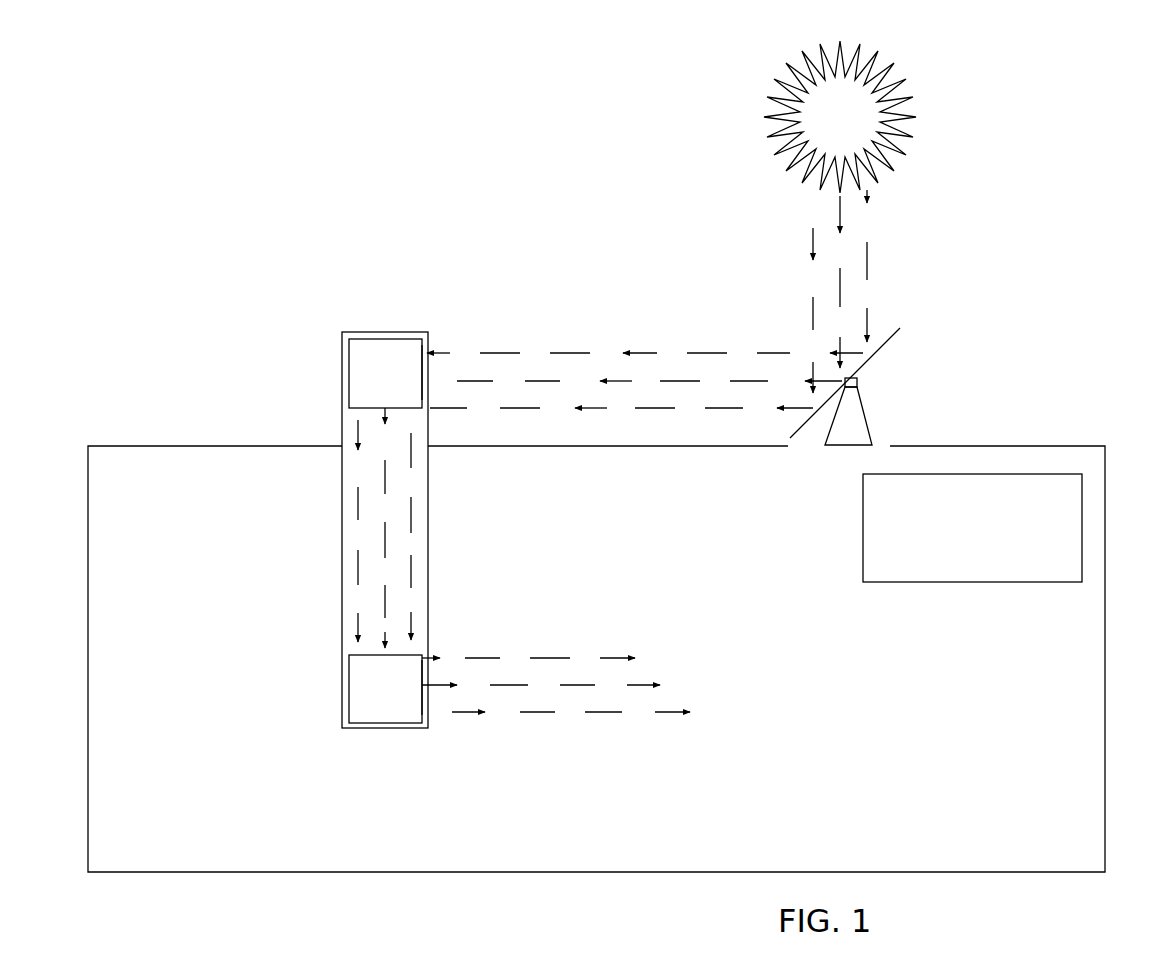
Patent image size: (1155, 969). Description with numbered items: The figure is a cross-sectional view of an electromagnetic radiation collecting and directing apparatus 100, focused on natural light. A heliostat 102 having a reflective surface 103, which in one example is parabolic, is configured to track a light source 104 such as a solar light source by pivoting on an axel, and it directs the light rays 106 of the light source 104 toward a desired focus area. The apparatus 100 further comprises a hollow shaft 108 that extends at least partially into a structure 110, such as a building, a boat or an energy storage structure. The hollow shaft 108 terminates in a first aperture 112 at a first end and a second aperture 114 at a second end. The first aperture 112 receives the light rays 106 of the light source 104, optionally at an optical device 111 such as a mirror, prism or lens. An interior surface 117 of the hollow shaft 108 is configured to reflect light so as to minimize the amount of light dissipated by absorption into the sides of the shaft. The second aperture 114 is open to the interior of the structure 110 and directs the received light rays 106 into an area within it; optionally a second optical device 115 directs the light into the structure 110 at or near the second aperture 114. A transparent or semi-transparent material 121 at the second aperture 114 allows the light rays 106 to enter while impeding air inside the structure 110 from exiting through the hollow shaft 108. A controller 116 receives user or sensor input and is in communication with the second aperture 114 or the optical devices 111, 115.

The electromagnetic radiation collecting and directing apparatus 100 is at (1047, 125).
The heliostat 102 is at (908, 346).
The reflective surface 103 is at (893, 335).
The light source 104 is at (840, 117).
The light rays 106 is at (623, 353).
The hollow shaft 108 is at (380, 516).
The structure 110 is at (596, 659).
The optical device 111 is at (385, 373).
The first aperture 112 is at (428, 374).
The second aperture 114 is at (436, 699).
The second optical device 115 is at (385, 689).
The controller 116 is at (972, 528).
The interior surface 117 is at (427, 565).
The transparent or semi-transparent material 121 is at (428, 672).